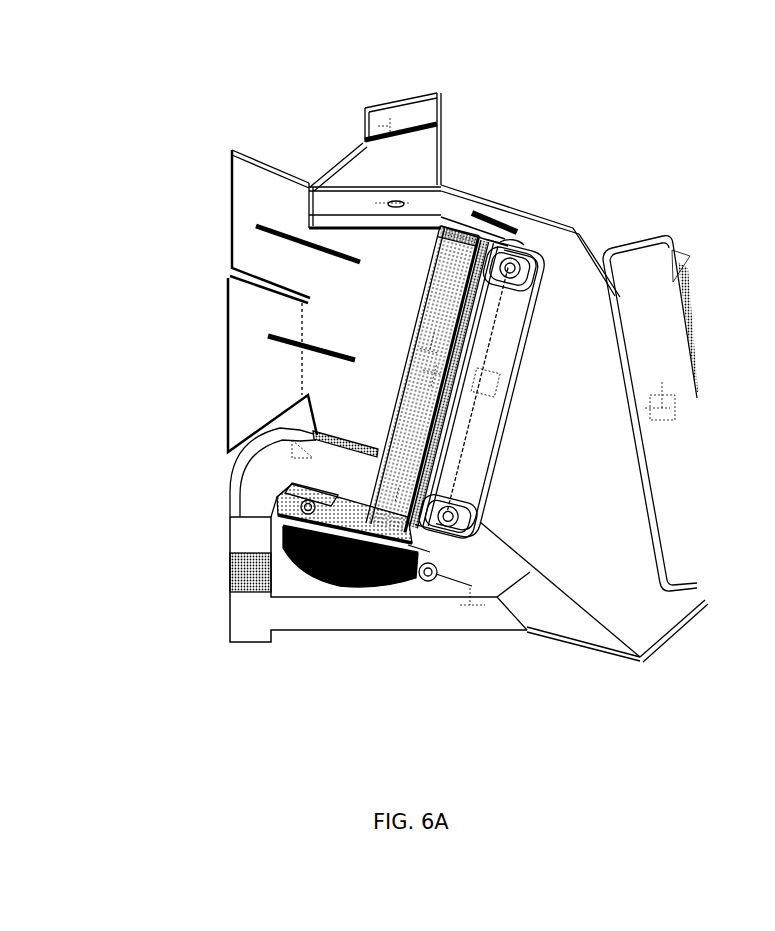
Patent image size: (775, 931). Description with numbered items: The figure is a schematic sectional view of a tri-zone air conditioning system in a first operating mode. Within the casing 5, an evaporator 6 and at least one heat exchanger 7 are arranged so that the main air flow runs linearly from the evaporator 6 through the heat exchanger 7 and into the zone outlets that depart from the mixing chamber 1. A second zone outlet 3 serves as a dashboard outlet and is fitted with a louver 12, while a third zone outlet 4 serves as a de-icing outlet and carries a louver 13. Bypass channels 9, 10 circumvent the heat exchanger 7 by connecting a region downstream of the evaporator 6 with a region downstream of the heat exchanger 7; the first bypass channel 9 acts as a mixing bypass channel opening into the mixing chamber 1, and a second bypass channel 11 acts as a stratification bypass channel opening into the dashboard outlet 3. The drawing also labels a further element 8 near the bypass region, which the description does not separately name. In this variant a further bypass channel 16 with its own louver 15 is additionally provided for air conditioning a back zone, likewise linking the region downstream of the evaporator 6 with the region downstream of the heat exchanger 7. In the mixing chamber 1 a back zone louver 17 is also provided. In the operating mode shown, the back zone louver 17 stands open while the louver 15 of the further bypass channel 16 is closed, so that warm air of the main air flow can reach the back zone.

The mixing chamber 1 is at (415, 379).
The second zone outlet 3 is at (245, 243).
The third zone outlet 4 is at (420, 152).
The casing 5 is at (668, 628).
The evaporator 6 is at (665, 288).
The heat exchanger 7 is at (477, 410).
The roller housing 8 is at (510, 240).
The first bypass channel 9 is at (546, 245).
The bypass channel 10 is at (450, 205).
The second bypass channel 11 is at (342, 202).
The louver 12 is at (270, 223).
The louver 13 is at (407, 130).
The louver 15 is at (488, 618).
The further bypass channel 16 is at (367, 622).
The back zone louver 17 is at (290, 443).